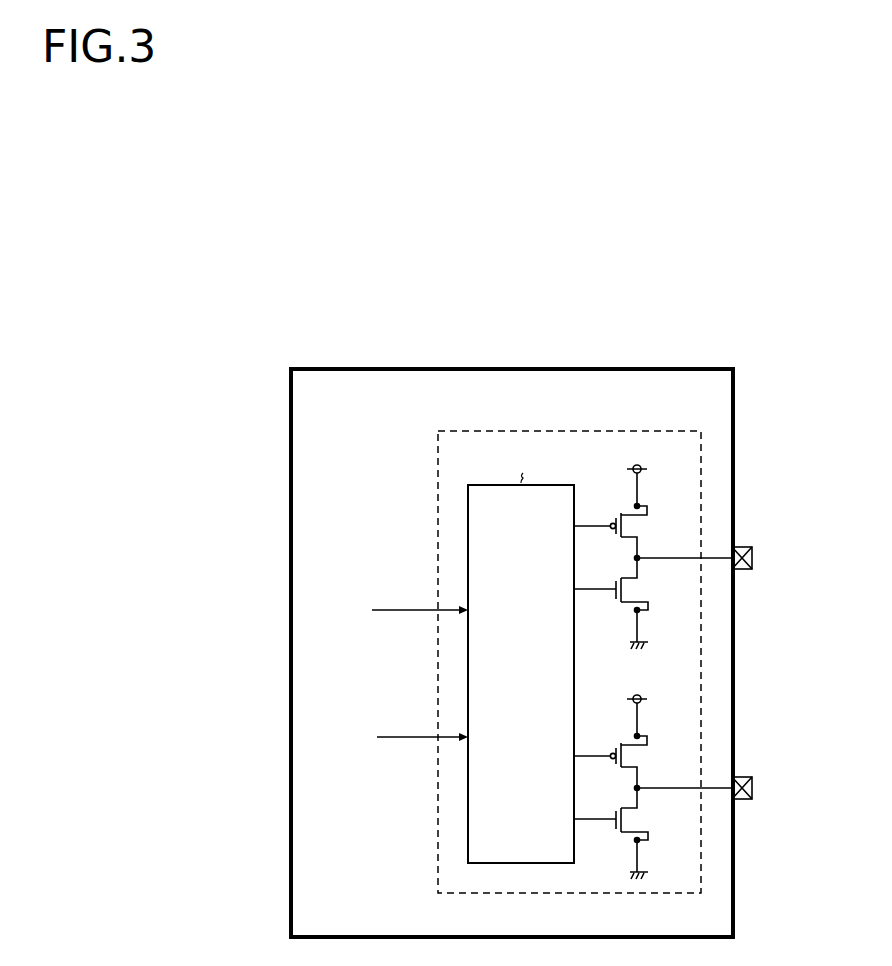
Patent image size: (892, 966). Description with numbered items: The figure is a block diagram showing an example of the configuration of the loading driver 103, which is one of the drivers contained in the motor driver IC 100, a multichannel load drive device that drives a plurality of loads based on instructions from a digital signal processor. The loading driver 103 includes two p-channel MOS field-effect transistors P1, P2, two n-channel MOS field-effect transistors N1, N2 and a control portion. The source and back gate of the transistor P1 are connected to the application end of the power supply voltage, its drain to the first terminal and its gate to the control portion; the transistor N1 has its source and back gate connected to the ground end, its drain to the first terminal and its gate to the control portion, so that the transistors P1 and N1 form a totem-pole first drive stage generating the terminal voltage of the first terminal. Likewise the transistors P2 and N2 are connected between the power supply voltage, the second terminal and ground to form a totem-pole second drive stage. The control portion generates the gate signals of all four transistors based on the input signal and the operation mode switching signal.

The motor driver IC 100 is at (513, 368).
The loading driver 103 is at (568, 429).
The p-channel MOS field-effect transistor P1 is at (633, 532).
The n-channel MOS field-effect transistor N1 is at (634, 584).
The p-channel MOS field-effect transistor P2 is at (633, 762).
The n-channel MOS field-effect transistor N2 is at (634, 814).